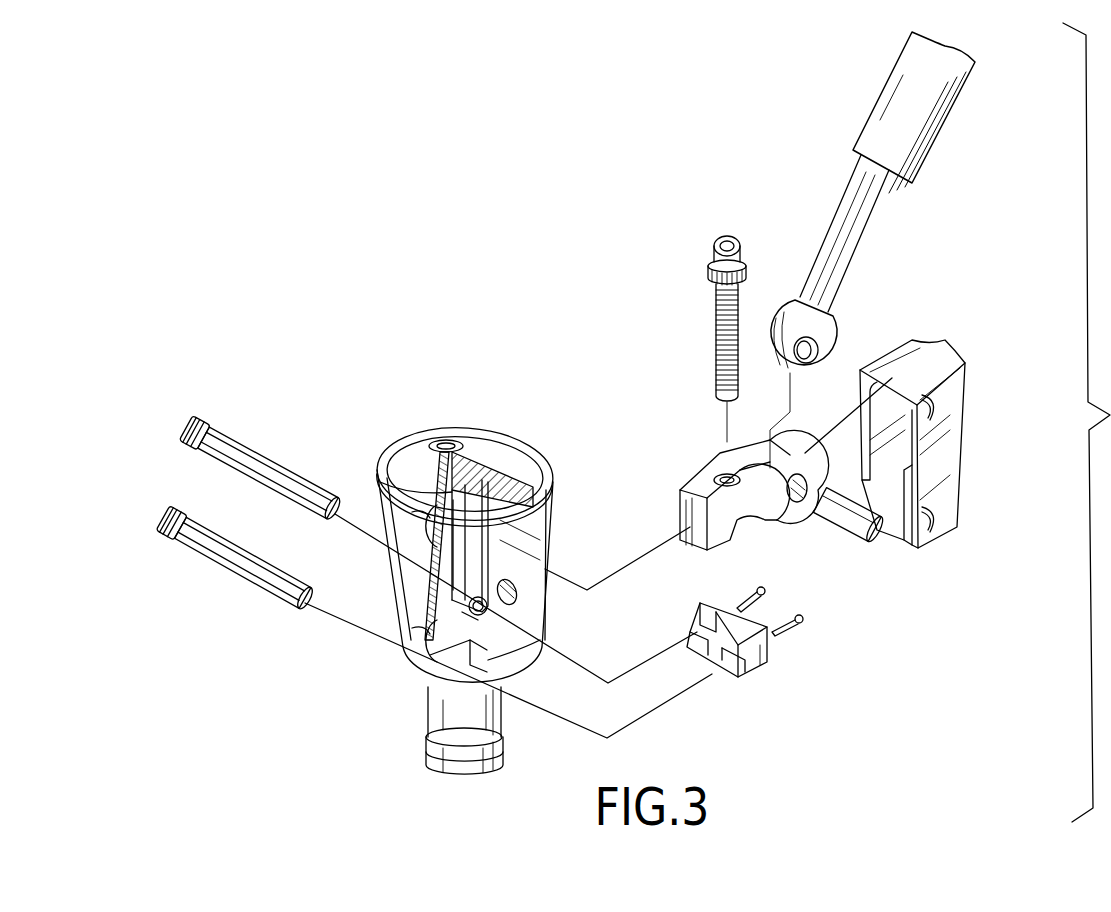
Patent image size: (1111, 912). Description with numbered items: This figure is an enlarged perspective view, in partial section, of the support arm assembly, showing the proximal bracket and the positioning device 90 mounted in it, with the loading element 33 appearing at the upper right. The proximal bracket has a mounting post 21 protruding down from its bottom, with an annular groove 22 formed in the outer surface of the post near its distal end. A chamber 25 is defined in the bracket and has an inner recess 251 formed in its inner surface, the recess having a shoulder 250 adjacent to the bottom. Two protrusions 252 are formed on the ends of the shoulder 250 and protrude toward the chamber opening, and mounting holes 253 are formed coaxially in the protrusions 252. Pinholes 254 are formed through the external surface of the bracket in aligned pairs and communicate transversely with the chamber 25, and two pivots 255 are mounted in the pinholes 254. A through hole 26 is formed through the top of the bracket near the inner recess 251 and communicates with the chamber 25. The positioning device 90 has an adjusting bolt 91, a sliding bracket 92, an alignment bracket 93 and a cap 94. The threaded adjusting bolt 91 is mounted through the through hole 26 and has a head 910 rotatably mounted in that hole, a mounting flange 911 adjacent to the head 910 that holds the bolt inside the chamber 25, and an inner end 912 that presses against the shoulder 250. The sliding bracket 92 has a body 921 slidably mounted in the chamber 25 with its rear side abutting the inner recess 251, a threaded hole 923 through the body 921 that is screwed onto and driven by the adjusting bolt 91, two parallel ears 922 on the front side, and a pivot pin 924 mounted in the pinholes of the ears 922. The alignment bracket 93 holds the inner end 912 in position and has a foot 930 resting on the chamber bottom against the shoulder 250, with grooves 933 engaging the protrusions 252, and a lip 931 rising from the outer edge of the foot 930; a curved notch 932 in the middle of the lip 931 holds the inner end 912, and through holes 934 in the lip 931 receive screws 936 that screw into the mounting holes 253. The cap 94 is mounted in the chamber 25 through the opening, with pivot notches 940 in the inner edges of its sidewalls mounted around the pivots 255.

The mounting post 21 is at (440, 708).
The annular groove 22 is at (450, 747).
The chamber 25 is at (532, 530).
The through hole 26 is at (443, 450).
The loading element 33 is at (845, 68).
The positioning device 90 is at (666, 307).
The adjusting bolt 91 is at (856, 200).
The sliding bracket 92 is at (783, 499).
The alignment bracket 93 is at (746, 649).
The cap 94 is at (961, 444).
The shoulder 250 is at (483, 667).
The inner recess 251 is at (455, 567).
The protrusions 252 is at (487, 607).
The mounting holes 253 is at (470, 620).
The pinholes 254 is at (420, 518).
The pivots 255 is at (256, 470).
The head 910 is at (722, 243).
The mounting flange 911 is at (708, 272).
The inner end 912 is at (722, 398).
The body 921 is at (690, 500).
The parallel ears 922 is at (797, 508).
The threaded hole 923 is at (712, 472).
The pivot pin 924 is at (880, 540).
The foot 930 is at (753, 675).
The lip 931 is at (770, 643).
The curved notch 932 is at (718, 618).
The grooves 933 is at (690, 640).
The through holes 934 is at (755, 660).
The screws 936 is at (803, 622).
The pivot notches 940 is at (930, 410).